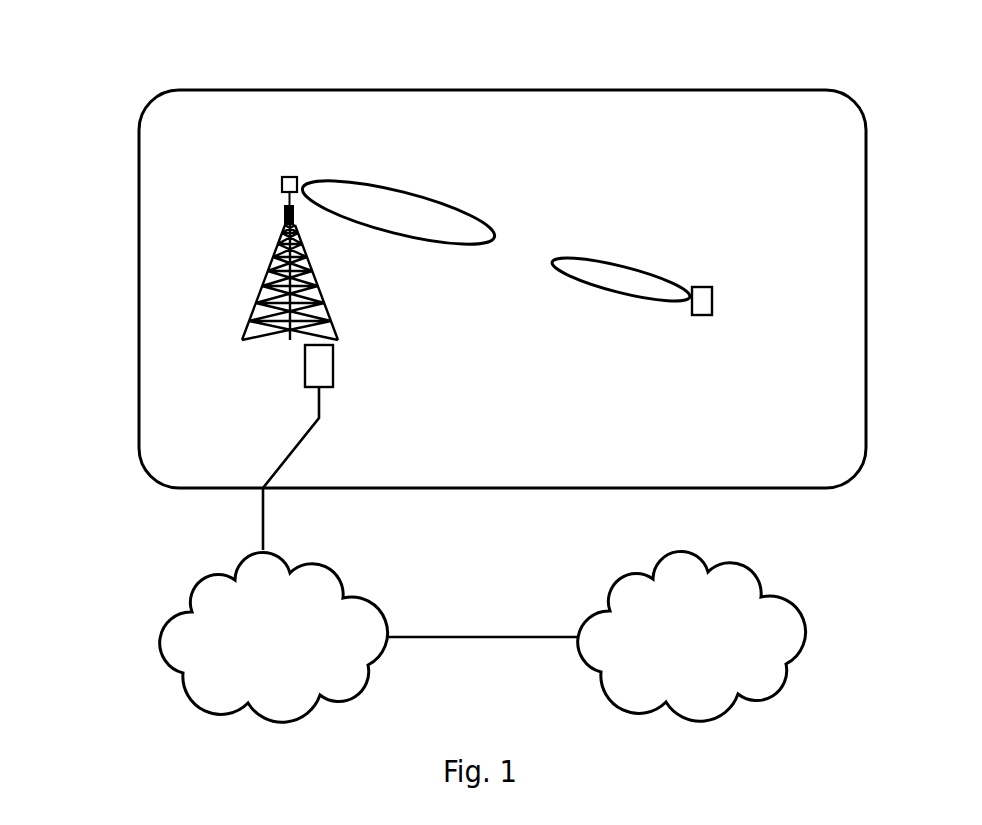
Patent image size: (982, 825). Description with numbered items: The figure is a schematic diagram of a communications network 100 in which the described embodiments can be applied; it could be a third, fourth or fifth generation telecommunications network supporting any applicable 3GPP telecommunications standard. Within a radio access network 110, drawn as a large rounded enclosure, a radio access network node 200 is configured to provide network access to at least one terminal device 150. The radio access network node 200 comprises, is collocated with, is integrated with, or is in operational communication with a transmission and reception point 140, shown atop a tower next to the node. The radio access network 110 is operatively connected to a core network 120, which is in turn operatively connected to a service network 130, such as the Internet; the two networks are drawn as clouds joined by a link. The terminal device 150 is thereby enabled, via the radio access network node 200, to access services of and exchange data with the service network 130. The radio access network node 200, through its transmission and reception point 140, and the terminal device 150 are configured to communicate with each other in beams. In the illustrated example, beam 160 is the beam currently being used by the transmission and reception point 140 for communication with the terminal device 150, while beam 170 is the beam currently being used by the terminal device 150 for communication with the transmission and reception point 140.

The communications network 100 is at (207, 59).
The radio access network 110 is at (139, 325).
The core network 120 is at (288, 647).
The service network 130 is at (718, 647).
The transmission and reception point 140 is at (282, 184).
The terminal device 150 is at (712, 297).
The beam 160 is at (400, 188).
The beam 170 is at (620, 266).
The radio access network node 200 is at (316, 366).